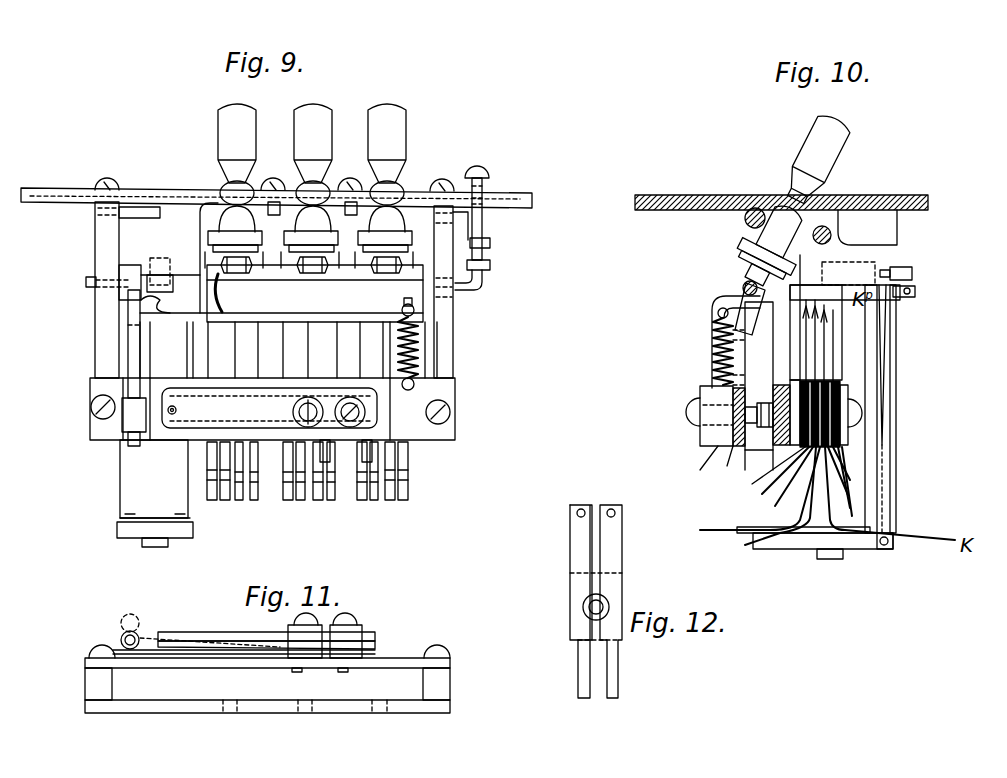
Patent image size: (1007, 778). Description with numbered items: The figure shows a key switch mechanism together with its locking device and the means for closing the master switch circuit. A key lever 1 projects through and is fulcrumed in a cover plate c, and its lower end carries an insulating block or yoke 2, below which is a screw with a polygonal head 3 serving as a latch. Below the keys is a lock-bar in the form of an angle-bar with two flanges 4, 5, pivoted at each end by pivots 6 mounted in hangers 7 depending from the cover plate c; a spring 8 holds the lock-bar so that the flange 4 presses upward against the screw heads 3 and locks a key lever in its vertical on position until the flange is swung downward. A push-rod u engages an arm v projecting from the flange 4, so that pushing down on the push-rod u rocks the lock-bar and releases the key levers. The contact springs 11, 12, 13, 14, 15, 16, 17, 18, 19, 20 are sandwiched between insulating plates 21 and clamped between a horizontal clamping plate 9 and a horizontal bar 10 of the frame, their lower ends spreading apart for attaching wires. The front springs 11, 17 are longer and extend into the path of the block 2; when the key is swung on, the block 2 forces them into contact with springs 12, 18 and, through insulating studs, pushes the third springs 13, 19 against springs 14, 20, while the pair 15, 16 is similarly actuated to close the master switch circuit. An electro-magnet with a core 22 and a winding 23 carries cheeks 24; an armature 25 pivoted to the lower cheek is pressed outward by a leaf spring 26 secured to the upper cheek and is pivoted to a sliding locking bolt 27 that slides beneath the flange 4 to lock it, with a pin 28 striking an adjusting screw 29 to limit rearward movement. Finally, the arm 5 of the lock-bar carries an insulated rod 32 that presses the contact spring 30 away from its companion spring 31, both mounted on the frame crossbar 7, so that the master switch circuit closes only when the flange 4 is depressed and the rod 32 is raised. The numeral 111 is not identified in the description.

In FIG. 9, the key lever 1 is at (296, 145).
In FIG. 10, the key lever 1 is at (806, 150).
In FIG. 9, the insulating block or yoke 2 is at (207, 236).
In FIG. 10, the insulating block or yoke 2 is at (740, 246).
In FIG. 9, the screw with polygonal head 3 is at (240, 272).
In FIG. 10, the screw with polygonal head 3 is at (748, 266).
In FIG. 9, the lock-bar flange 4 is at (119, 272).
In FIG. 10, the lock-bar flange 4 is at (768, 290).
In FIG. 9, the lock-bar flange 5 is at (128, 306).
In FIG. 10, the lock-bar flange 5 is at (745, 330).
In FIG. 9, the pivots 6 is at (86, 282).
In FIG. 9, the hangers 7 is at (95, 356).
In FIG. 10, the hangers 7 is at (787, 352).
In FIG. 9, the spring 8 is at (412, 342).
In FIG. 10, the spring 8 is at (713, 340).
In FIG. 10, the horizontal clamping plate 9 is at (848, 387).
In FIG. 10, the horizontal bar of the frame 10 is at (775, 447).
In FIG. 11, the horizontal bar of the frame 10 is at (392, 700).
In FIG. 9, the front contact spring 11 is at (405, 464).
In FIG. 10, the front contact spring 11 is at (812, 285).
In FIG. 9, the contact spring 12 is at (404, 480).
In FIG. 10, the contact spring 12 is at (775, 507).
In FIG. 9, the third contact spring 13 is at (404, 500).
In FIG. 10, the third contact spring 13 is at (780, 533).
In FIG. 10, the contact spring 14 is at (852, 516).
In FIG. 10, the contact spring 15 is at (848, 497).
In FIG. 10, the contact spring 16 is at (850, 485).
In FIG. 9, the front contact spring 17 is at (392, 470).
In FIG. 10, the front contact spring 17 is at (762, 494).
In FIG. 9, the contact spring 18 is at (392, 490).
In FIG. 10, the contact spring 18 is at (760, 530).
In FIG. 9, the third contact spring 19 is at (398, 502).
In FIG. 12, the third contact spring 19 is at (570, 562).
In FIG. 10, the contact spring 20 is at (850, 508).
In FIG. 10, the insulating plates 21 is at (838, 388).
In FIG. 9, the core 22 is at (152, 547).
In FIG. 10, the core 22 is at (845, 556).
In FIG. 9, the winding 23 is at (120, 494).
In FIG. 10, the winding 23 is at (862, 424).
In FIG. 9, the cheeks 24 is at (193, 534).
In FIG. 10, the cheeks 24 is at (870, 300).
In FIG. 10, the armature 25 is at (896, 440).
In FIG. 10, the leaf spring 26 is at (883, 385).
In FIG. 10, the sliding locking bolt 27 is at (915, 293).
In FIG. 10, the pin 28 is at (823, 302).
In FIG. 10, the adjusting screw 29 is at (912, 274).
In FIG. 9, the contact spring 30 is at (100, 420).
In FIG. 10, the contact spring 30 is at (704, 408).
In FIG. 11, the contact spring 30 is at (118, 650).
In FIG. 9, the contact spring 31 is at (198, 412).
In FIG. 10, the contact spring 31 is at (712, 424).
In FIG. 11, the contact spring 31 is at (190, 636).
In FIG. 9, the rod 32 is at (142, 340).
In FIG. 10, the wire 111 is at (818, 292).
In FIG. 9, the cover plate c is at (166, 197).
In FIG. 10, the cover plate c is at (862, 203).
In FIG. 9, the push-rod u is at (489, 176).
In FIG. 9, the arm v is at (484, 283).